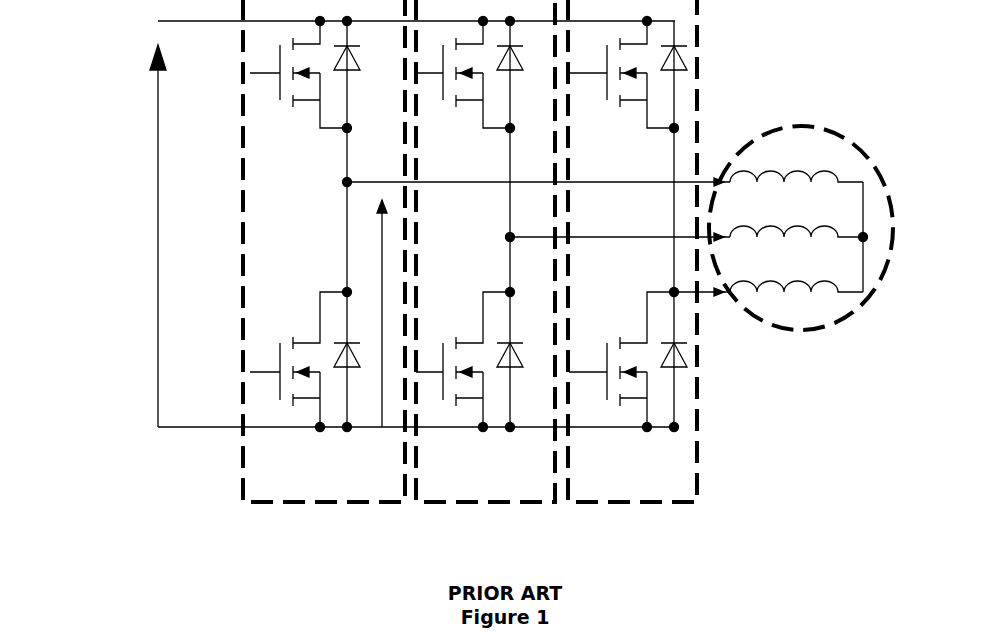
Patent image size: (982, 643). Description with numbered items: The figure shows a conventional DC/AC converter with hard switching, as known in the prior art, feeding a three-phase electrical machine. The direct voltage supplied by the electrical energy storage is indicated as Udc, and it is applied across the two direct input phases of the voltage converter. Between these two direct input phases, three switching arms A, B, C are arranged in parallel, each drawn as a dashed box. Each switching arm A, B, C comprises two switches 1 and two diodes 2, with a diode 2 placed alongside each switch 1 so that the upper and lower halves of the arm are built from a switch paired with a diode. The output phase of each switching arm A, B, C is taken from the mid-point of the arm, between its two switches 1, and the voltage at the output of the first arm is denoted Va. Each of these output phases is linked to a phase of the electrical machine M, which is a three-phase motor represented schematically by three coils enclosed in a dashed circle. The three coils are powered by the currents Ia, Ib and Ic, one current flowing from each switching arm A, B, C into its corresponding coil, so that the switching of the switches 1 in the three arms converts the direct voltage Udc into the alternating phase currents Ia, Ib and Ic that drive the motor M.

The switch 1 is at (283, 362).
The diode 2 is at (352, 352).
The switching arm A is at (226, 467).
The switching arm B is at (523, 481).
The switching arm C is at (670, 473).
The three-phase motor M is at (827, 325).
The direct voltage Udc is at (138, 236).
The phase A voltage Va is at (393, 313).
The current Ia is at (538, 167).
The current Ib is at (620, 222).
The current Ic is at (702, 277).